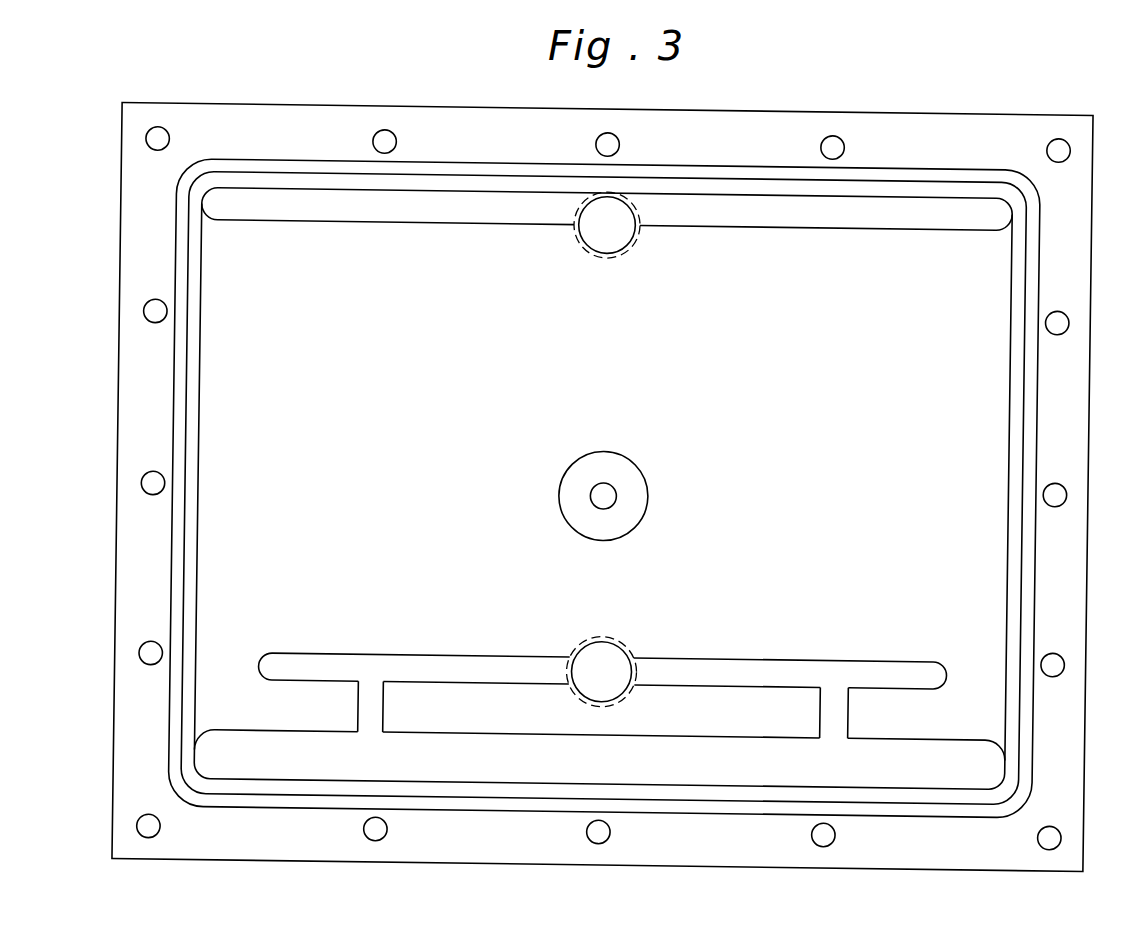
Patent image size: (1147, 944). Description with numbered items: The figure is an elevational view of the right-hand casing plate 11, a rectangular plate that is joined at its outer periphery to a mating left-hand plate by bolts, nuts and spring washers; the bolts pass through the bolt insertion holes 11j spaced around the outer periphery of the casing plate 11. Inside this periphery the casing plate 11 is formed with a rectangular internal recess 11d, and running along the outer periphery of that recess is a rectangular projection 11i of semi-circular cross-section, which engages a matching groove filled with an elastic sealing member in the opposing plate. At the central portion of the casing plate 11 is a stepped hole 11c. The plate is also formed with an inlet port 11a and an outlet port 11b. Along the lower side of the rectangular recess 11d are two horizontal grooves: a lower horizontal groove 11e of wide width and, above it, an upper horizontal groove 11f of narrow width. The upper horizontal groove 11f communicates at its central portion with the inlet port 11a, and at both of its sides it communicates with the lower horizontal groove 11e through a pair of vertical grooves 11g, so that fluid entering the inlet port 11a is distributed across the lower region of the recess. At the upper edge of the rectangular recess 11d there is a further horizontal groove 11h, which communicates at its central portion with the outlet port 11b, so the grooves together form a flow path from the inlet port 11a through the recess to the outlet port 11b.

The right-hand casing plate 11 is at (1070, 628).
The inlet port 11a is at (617, 654).
The outlet port 11b is at (620, 245).
The stepped hole 11c is at (629, 468).
The rectangular internal recess 11d is at (1010, 386).
The lower horizontal groove 11e is at (647, 738).
The upper horizontal groove 11f is at (750, 660).
The vertical grooves 11g is at (385, 708).
The horizontal groove 11h is at (757, 229).
The rectangular projection 11i is at (177, 437).
The bolt insertion holes 11j is at (149, 308).